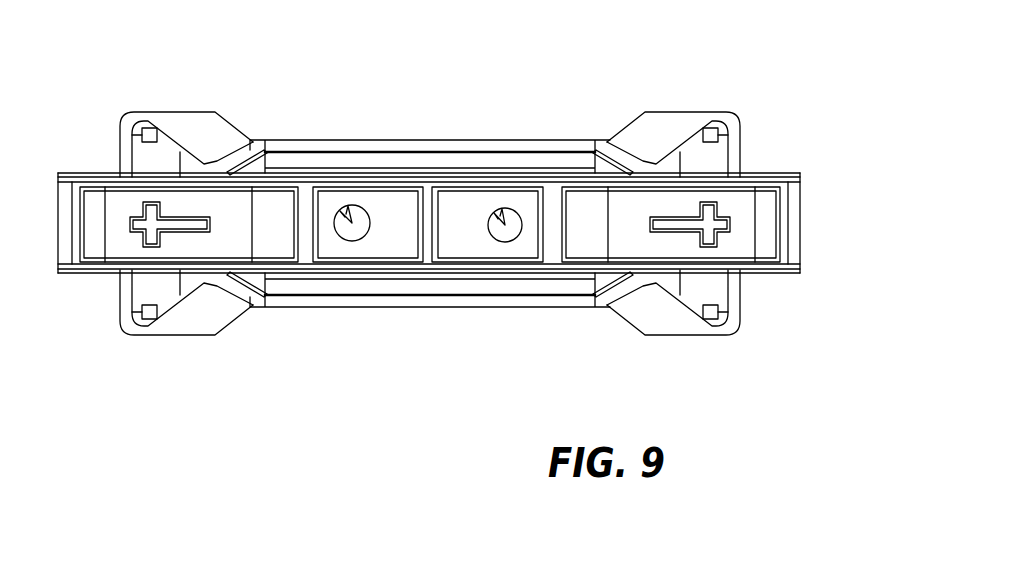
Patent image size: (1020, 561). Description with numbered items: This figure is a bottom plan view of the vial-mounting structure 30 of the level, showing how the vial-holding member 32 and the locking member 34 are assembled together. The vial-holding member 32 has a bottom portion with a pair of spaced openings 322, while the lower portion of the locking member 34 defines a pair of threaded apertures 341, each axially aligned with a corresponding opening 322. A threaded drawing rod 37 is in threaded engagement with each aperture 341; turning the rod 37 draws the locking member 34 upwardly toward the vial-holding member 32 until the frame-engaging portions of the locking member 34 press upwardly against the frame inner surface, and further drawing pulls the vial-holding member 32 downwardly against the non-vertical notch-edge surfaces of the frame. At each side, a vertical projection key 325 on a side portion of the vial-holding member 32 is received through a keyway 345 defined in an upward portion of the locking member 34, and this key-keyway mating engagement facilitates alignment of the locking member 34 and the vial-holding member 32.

The vial-mounting structure 30 is at (517, 70).
The vial-holding member 32 is at (668, 128).
The opening 322 is at (347, 213).
The projection key 325 is at (703, 228).
The threaded aperture 341 is at (340, 237).
The threaded drawing rod 37 is at (358, 230).
The keyway 345 is at (703, 228).
The locking member 34 is at (737, 243).